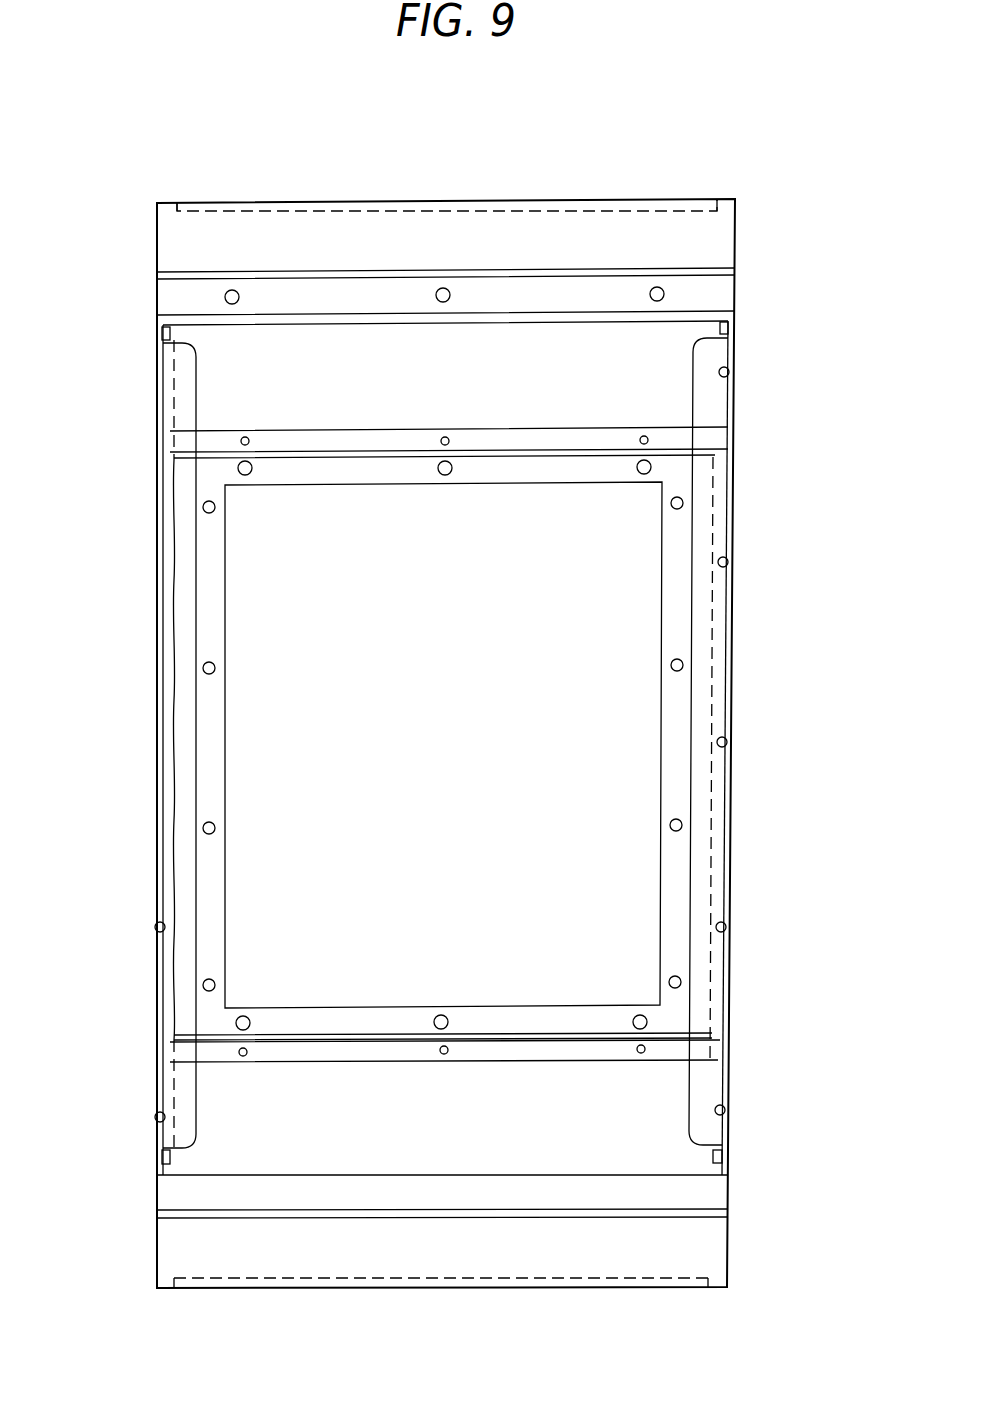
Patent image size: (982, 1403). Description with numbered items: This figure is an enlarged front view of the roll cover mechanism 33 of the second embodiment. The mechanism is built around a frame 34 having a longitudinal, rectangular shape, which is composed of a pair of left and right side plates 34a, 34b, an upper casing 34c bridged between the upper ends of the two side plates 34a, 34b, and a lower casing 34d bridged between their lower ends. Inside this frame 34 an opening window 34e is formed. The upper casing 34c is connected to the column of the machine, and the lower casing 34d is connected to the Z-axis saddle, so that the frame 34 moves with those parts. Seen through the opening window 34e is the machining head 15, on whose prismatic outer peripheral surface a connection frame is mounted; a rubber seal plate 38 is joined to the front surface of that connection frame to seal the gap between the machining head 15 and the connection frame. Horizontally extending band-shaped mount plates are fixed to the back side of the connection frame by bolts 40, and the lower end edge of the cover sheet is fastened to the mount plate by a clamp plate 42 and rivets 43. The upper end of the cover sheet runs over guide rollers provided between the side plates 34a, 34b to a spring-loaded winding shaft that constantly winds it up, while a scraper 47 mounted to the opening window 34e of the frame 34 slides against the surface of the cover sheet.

The roll cover mechanism 33 is at (583, 172).
The frame 34 is at (470, 200).
The left side plate 34a is at (157, 696).
The right side plate 34b is at (732, 693).
The upper casing 34c is at (319, 202).
The lower casing 34d is at (378, 1290).
The opening window 34e is at (660, 374).
The machining head 15 is at (650, 595).
The rubber seal plate 38 is at (386, 484).
The bolts 40 is at (248, 476).
The clamp plate 42 is at (362, 437).
The rivets 43 is at (446, 437).
The scraper 47 is at (279, 320).